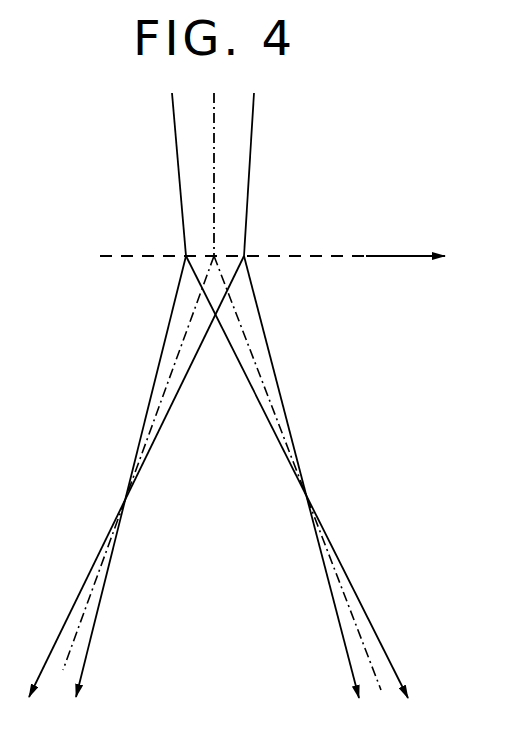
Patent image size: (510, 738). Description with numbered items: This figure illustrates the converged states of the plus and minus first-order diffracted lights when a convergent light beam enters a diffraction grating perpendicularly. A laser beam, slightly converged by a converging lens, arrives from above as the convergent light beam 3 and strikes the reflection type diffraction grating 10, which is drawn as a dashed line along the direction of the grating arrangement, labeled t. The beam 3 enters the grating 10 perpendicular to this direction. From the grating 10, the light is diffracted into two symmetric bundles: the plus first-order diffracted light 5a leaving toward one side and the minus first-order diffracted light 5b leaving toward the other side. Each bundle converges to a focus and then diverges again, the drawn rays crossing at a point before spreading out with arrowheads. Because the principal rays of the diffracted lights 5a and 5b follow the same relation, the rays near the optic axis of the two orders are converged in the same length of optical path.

The convergent light beam 3 is at (213, 147).
The reflection type diffraction grating 10 is at (323, 256).
The +1st-order diffracted light 5a is at (283, 420).
The -1st-order diffracted light 5b is at (153, 417).